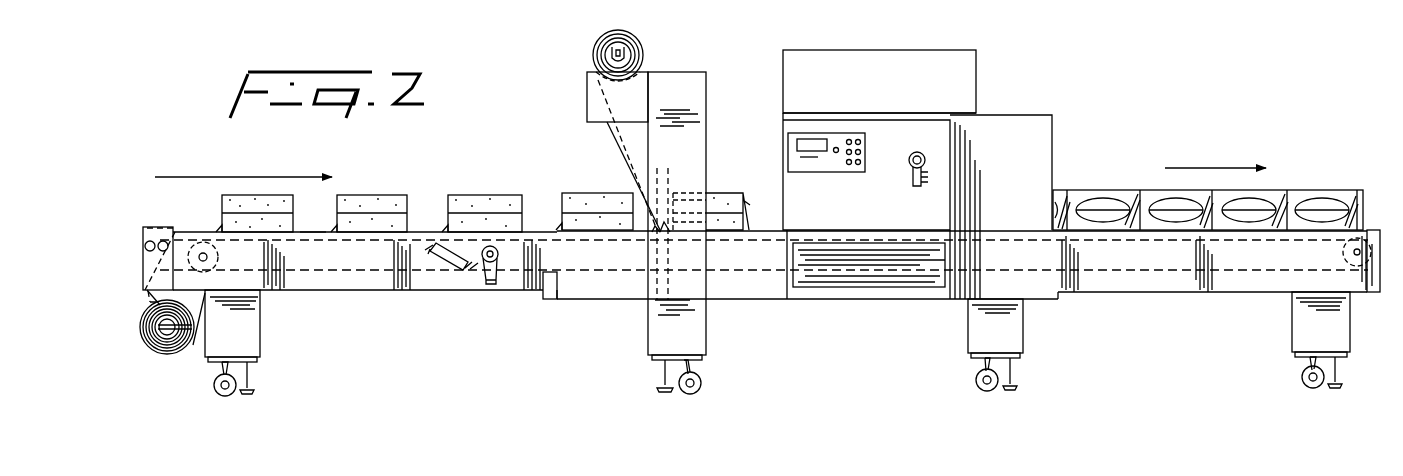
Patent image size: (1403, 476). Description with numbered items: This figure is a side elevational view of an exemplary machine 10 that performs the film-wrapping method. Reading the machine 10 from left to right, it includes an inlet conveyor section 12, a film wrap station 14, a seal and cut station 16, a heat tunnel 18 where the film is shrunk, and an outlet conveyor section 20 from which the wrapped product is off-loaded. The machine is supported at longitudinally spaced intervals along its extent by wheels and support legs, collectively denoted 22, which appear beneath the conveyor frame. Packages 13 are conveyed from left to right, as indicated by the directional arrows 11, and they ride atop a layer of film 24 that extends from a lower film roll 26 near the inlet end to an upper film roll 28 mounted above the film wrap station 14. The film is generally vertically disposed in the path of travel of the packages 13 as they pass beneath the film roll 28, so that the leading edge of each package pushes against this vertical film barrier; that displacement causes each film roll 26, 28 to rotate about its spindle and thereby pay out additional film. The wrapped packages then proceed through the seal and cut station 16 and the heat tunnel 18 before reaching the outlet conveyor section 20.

The machine 10 is at (1147, 89).
The directional arrows 11 is at (188, 182).
The inlet conveyor section 12 is at (408, 296).
The packages 13 is at (460, 193).
The film wrap station 14 is at (572, 98).
The seal and cut station 16 is at (692, 61).
The heat tunnel 18 is at (1004, 98).
The outlet conveyor section 20 is at (1160, 306).
The wheels and support legs 22 is at (212, 383).
The layer of film 24 is at (313, 232).
The film roll 26 is at (141, 335).
The film roll 28 is at (640, 36).